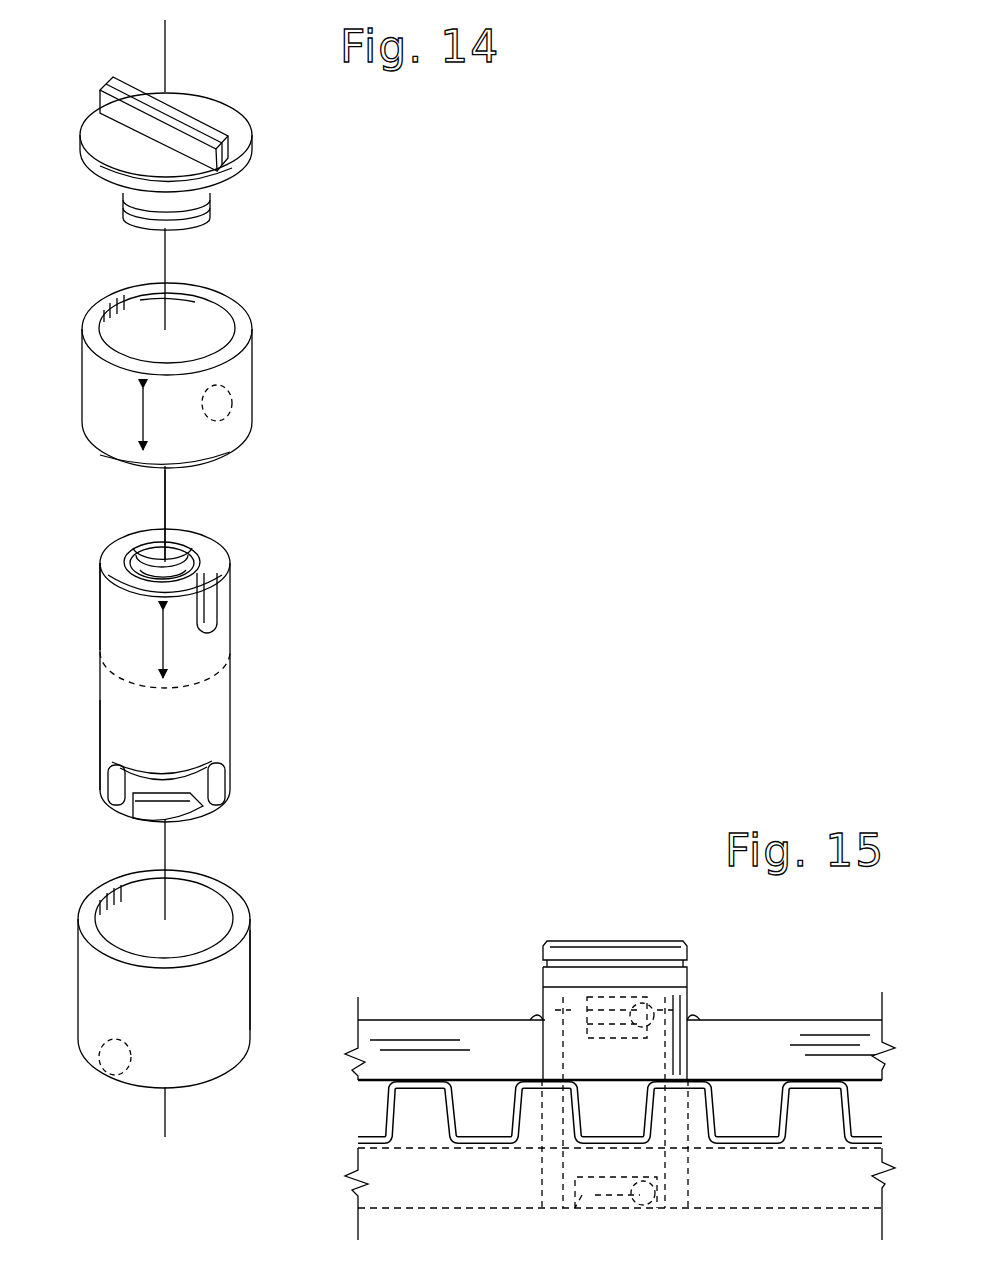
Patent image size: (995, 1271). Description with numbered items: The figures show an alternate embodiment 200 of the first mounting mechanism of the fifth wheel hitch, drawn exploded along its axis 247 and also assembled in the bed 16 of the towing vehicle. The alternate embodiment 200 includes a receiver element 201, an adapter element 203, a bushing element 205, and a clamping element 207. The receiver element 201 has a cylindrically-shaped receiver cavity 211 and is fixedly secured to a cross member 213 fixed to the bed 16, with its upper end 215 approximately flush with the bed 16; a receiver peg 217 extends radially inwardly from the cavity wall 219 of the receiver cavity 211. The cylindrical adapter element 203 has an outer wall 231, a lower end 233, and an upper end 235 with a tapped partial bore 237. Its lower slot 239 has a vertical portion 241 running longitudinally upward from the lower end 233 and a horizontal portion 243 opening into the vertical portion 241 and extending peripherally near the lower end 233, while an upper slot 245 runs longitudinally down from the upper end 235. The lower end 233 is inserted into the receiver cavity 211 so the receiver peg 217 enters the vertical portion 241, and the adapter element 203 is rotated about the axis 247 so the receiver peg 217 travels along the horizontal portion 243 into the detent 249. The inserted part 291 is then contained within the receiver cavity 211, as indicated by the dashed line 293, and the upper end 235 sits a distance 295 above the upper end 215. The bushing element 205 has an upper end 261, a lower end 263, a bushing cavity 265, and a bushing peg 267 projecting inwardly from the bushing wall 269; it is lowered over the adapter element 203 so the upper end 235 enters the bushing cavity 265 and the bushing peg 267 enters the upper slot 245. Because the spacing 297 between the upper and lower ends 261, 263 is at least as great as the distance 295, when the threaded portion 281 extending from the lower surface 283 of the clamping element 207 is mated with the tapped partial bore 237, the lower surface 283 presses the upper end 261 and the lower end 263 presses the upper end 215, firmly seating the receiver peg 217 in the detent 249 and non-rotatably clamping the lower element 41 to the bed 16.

In FIG. 15, the bed 16 is at (388, 1114).
In FIG. 15, the lower element 41 is at (830, 1021).
In FIG. 14, the alternate embodiment 200 is at (406, 160).
In FIG. 15, the alternate embodiment 200 is at (547, 893).
In FIG. 14, the receiver element 201 is at (243, 965).
In FIG. 15, the receiver element 201 is at (677, 1195).
In FIG. 14, the adapter element 203 is at (232, 640).
In FIG. 15, the adapter element 203 is at (545, 1012).
In FIG. 14, the bushing element 205 is at (246, 366).
In FIG. 15, the bushing element 205 is at (545, 997).
In FIG. 14, the clamping element 207 is at (232, 131).
In FIG. 15, the clamping element 207 is at (662, 948).
In FIG. 14, the receiver cavity 211 is at (121, 912).
In FIG. 15, the cross member 213 is at (432, 1194).
In FIG. 14, the upper end 215 is at (236, 929).
In FIG. 14, the receiver peg 217 is at (115, 1073).
In FIG. 15, the receiver peg 217 is at (643, 1200).
In FIG. 14, the cavity wall 219 is at (212, 916).
In FIG. 14, the outer wall 231 is at (108, 604).
In FIG. 14, the lower end 233 is at (231, 786).
In FIG. 14, the upper end 235 is at (216, 566).
In FIG. 14, the tapped partial bore 237 is at (148, 560).
In FIG. 14, the lower slot 239 is at (128, 758).
In FIG. 15, the lower slot 239 is at (590, 1190).
In FIG. 14, the vertical portion 241 is at (118, 797).
In FIG. 14, the horizontal portion 243 is at (176, 783).
In FIG. 14, the upper slot 245 is at (206, 605).
In FIG. 14, the axis 247 is at (168, 500).
In FIG. 14, the detent 249 is at (206, 796).
In FIG. 14, the upper end 261 is at (246, 323).
In FIG. 14, the lower end 263 is at (240, 441).
In FIG. 14, the bushing cavity 265 is at (137, 322).
In FIG. 14, the bushing peg 267 is at (237, 404).
In FIG. 15, the bushing peg 267 is at (690, 1000).
In FIG. 14, the bushing wall 269 is at (198, 307).
In FIG. 14, the threaded portion 281 is at (211, 206).
In FIG. 14, the lower surface 283 is at (238, 173).
In FIG. 14, the inserted part 291 is at (108, 759).
In FIG. 14, the dashed line 293 is at (232, 688).
In FIG. 14, the distance 295 is at (160, 637).
In FIG. 14, the spacing 297 is at (143, 418).